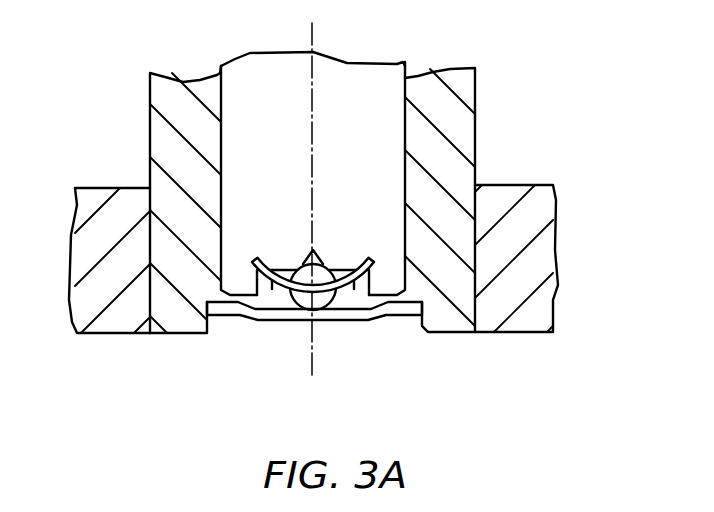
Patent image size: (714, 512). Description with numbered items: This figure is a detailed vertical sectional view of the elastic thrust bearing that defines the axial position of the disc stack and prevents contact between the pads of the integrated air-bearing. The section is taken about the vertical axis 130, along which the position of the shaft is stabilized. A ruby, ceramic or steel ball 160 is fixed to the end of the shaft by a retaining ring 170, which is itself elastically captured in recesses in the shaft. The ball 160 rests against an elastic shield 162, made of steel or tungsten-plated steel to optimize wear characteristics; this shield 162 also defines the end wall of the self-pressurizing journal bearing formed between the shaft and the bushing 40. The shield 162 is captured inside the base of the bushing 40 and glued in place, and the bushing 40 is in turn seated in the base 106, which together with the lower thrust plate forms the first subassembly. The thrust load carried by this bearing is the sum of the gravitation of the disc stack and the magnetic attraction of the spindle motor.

The vertical axis 130 is at (312, 38).
The bushing 40 is at (465, 125).
The base 106 is at (513, 187).
The ball 160 is at (309, 300).
The elastic shield 162 is at (337, 318).
The retaining ring 170 is at (270, 282).